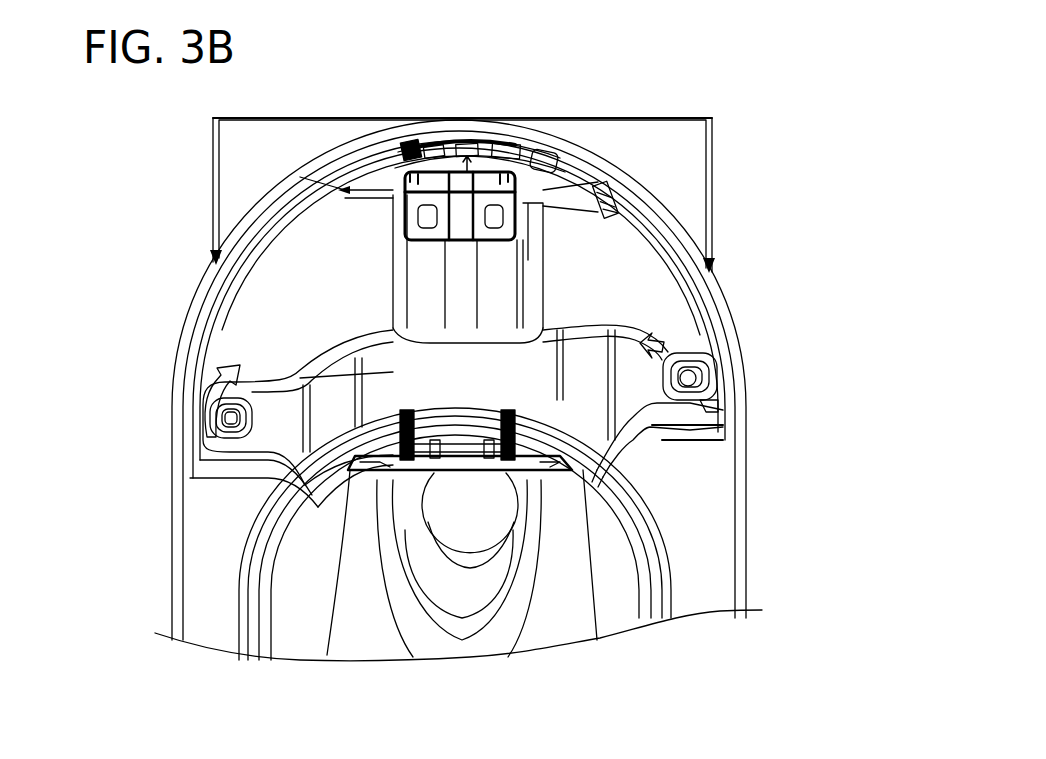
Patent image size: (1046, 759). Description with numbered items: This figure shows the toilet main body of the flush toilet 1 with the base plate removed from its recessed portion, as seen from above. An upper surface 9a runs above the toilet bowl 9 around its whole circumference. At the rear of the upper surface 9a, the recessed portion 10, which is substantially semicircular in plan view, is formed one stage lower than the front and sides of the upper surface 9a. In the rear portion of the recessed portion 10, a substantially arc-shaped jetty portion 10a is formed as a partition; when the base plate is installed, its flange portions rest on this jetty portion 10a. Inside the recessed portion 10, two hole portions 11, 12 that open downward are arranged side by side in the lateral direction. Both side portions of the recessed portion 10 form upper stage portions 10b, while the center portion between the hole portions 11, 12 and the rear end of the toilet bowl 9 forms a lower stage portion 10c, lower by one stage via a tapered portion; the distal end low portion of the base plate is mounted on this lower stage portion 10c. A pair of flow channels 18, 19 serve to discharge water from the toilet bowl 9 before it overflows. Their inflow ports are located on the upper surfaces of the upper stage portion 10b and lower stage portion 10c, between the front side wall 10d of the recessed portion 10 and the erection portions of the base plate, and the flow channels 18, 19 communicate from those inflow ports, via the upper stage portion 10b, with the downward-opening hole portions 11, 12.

The flush toilet 1 is at (160, 278).
The toilet bowl 9 is at (197, 605).
The upper surface 9a is at (210, 563).
The recessed portion 10 is at (670, 338).
The jetty portion 10a is at (361, 150).
The upper stage portion 10b is at (257, 396).
The lower stage portion 10c is at (350, 397).
The front side wall 10d is at (275, 490).
The hole portion 11 is at (283, 281).
The hole portion 12 is at (608, 253).
The flow channel 18 is at (280, 483).
The flow channel 19 is at (718, 401).